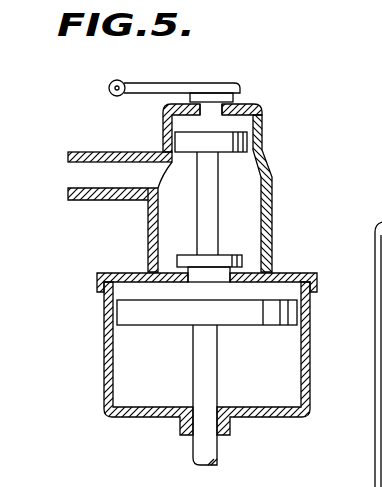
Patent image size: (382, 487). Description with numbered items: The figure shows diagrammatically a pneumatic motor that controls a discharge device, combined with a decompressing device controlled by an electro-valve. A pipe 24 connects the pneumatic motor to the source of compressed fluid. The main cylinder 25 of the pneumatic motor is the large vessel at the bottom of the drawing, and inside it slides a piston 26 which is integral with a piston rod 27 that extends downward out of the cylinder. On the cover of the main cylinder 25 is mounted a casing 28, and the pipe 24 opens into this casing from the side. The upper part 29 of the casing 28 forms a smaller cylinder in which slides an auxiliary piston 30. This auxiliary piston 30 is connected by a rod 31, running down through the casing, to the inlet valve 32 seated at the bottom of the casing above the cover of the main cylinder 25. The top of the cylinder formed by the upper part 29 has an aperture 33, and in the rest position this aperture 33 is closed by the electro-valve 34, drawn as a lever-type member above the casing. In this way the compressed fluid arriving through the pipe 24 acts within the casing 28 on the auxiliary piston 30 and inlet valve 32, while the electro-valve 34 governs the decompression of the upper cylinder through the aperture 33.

The pipe 24 is at (93, 170).
The main cylinder 25 is at (104, 353).
The piston 26 is at (127, 312).
The piston rod 27 is at (203, 442).
The casing 28 is at (242, 190).
The upper part of the casing 29 is at (164, 118).
The auxiliary piston 30 is at (250, 138).
The rod 31 is at (203, 238).
The inlet valve 32 is at (243, 260).
The aperture 33 is at (241, 106).
The electro-valve 34 is at (178, 93).